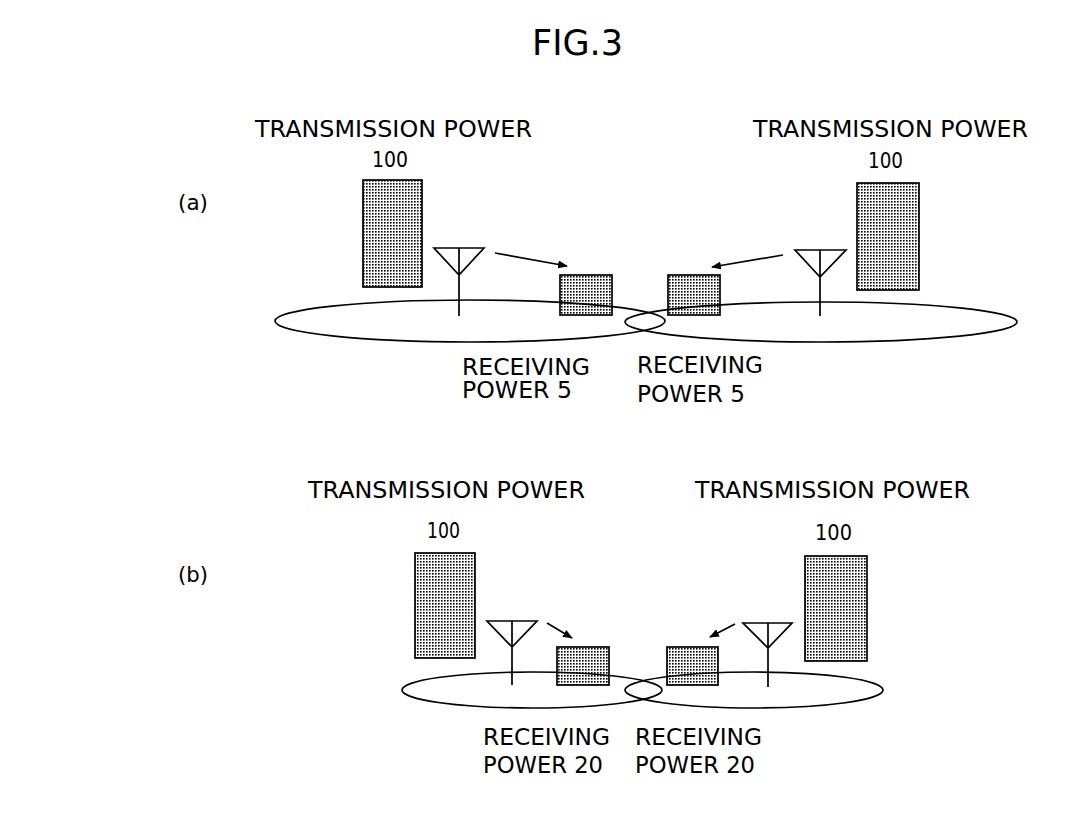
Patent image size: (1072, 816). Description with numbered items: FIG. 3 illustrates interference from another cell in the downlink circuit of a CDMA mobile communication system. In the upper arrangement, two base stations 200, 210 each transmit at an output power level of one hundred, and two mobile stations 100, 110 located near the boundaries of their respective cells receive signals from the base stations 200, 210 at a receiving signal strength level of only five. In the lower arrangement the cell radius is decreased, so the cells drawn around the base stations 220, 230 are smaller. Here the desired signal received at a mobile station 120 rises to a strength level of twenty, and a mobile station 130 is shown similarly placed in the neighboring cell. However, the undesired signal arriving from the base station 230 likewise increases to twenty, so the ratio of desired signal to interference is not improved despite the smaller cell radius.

The mobile station 100 is at (598, 274).
The mobile station 110 is at (679, 274).
The mobile station 120 is at (595, 646).
The mobile station 130 is at (679, 646).
The base station 200 is at (392, 287).
The base station 210 is at (885, 290).
The base station 220 is at (445, 658).
The base station 230 is at (835, 661).